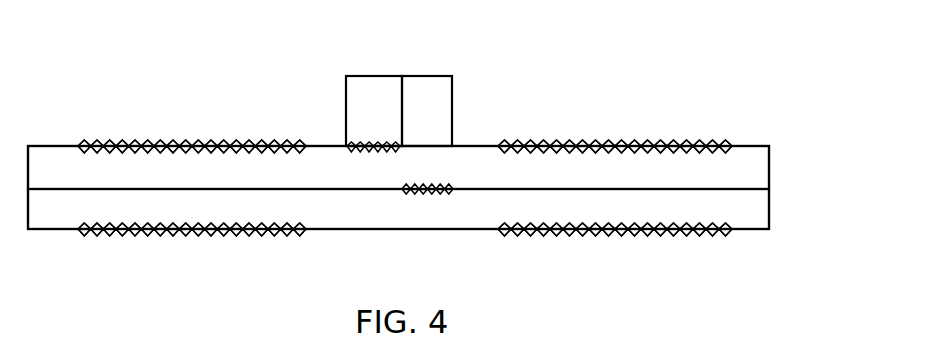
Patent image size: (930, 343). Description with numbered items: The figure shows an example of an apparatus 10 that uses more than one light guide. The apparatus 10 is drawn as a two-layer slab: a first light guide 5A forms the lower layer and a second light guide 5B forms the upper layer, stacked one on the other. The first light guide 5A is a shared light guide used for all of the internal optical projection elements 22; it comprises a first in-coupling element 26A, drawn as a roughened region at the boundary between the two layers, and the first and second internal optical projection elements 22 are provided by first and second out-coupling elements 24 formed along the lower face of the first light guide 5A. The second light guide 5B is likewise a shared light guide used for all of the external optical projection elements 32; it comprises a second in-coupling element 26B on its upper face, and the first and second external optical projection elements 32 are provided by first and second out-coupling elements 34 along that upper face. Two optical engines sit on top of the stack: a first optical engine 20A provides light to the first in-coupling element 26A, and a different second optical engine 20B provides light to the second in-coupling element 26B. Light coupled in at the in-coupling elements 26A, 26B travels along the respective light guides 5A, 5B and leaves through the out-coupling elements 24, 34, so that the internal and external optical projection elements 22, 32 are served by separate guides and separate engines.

The apparatus 10 is at (739, 69).
The first light guide 5A is at (769, 208).
The second light guide 5B is at (769, 166).
The first optical engine 20A is at (430, 76).
The second optical engine 20B is at (370, 76).
The internal optical projection elements 22 is at (124, 248).
The out-coupling elements 24 is at (242, 238).
The first in-coupling element 26A is at (428, 196).
The second in-coupling element 26B is at (378, 155).
The external optical projection elements 32 is at (85, 122).
The out-coupling elements 34 is at (190, 140).